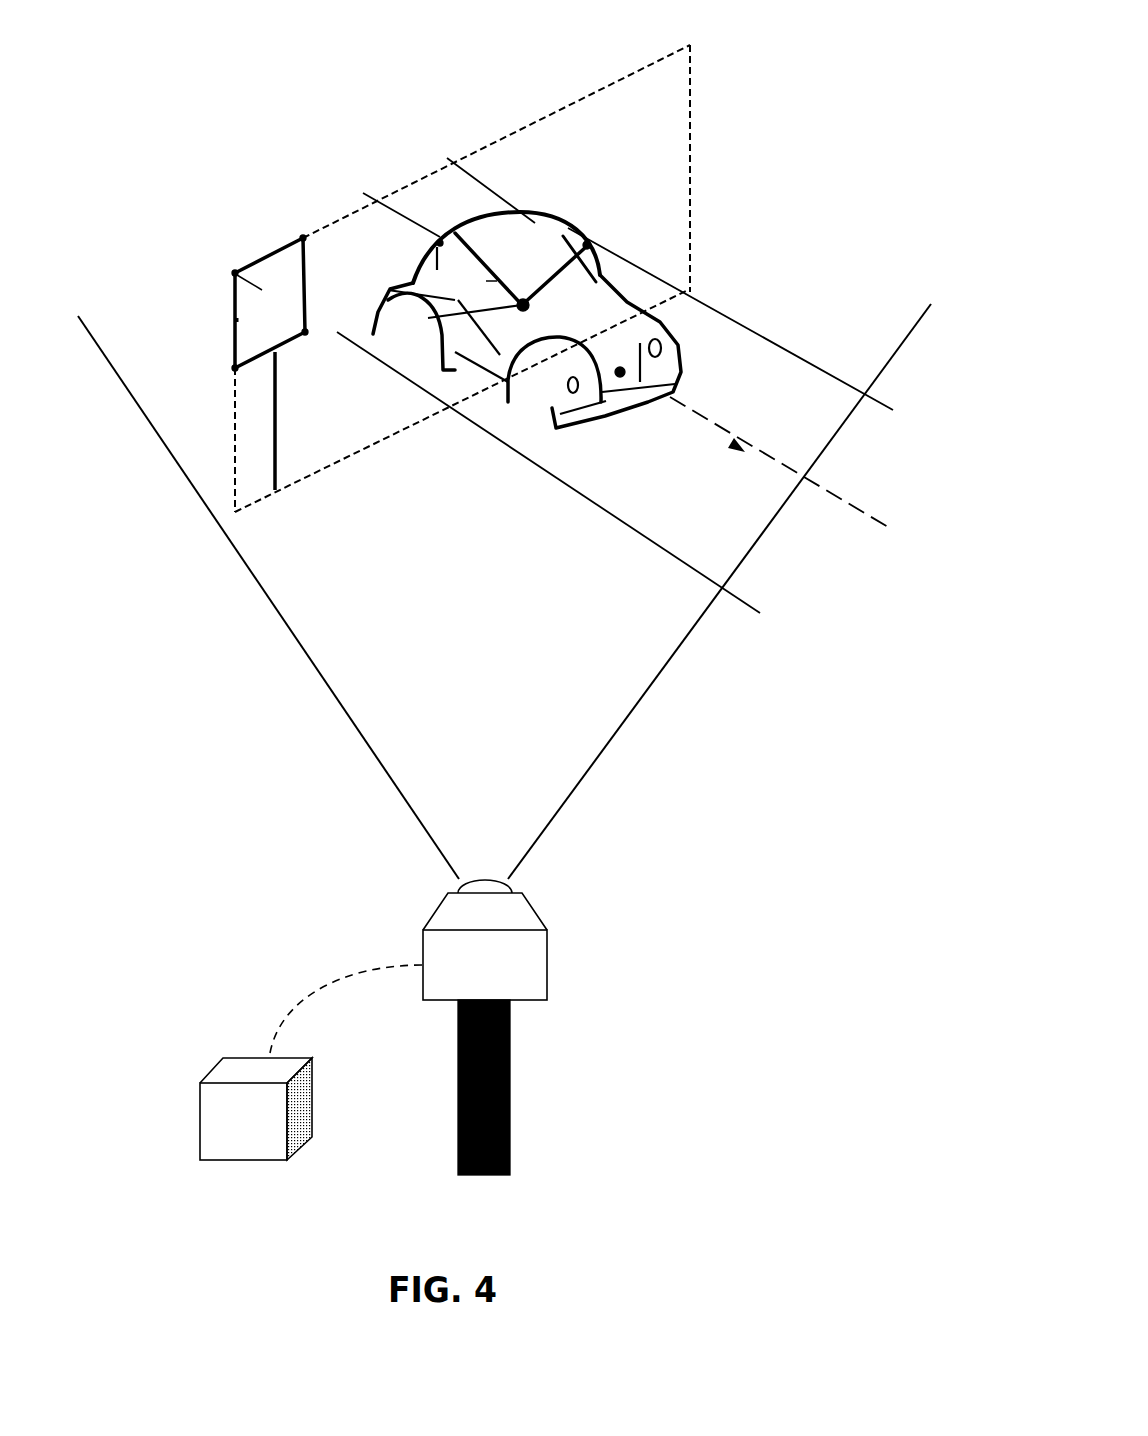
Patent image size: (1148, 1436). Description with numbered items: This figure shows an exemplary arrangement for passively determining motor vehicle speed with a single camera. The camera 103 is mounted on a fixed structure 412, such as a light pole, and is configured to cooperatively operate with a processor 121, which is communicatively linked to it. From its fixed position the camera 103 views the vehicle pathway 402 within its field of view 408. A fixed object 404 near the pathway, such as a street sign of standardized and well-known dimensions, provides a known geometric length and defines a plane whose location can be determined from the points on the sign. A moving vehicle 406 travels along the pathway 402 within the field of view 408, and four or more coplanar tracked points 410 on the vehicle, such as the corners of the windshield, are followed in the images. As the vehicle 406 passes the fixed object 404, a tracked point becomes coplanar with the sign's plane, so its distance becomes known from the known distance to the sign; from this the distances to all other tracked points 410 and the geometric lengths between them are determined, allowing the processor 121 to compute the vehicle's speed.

The vehicle pathway 402 is at (793, 373).
The fixed object 404 is at (277, 263).
The vehicle 406 is at (535, 222).
The field of view 408 is at (338, 698).
The tracked points 410 is at (560, 270).
The camera 103 is at (497, 977).
The fixed structure 412 is at (510, 1068).
The processor 121 is at (230, 1073).